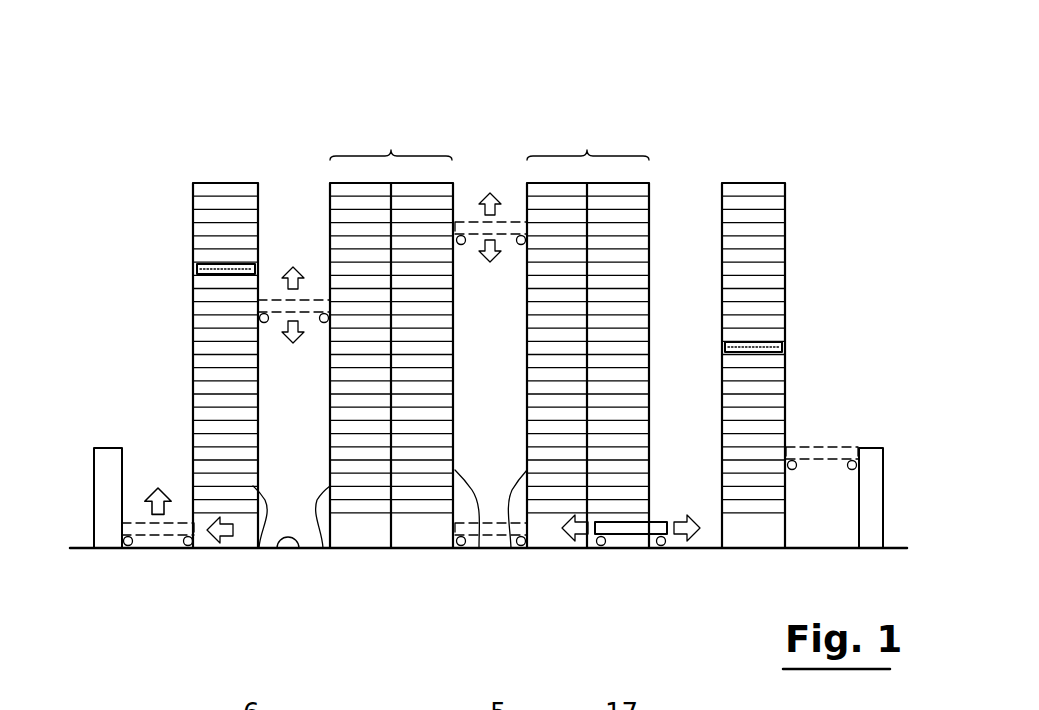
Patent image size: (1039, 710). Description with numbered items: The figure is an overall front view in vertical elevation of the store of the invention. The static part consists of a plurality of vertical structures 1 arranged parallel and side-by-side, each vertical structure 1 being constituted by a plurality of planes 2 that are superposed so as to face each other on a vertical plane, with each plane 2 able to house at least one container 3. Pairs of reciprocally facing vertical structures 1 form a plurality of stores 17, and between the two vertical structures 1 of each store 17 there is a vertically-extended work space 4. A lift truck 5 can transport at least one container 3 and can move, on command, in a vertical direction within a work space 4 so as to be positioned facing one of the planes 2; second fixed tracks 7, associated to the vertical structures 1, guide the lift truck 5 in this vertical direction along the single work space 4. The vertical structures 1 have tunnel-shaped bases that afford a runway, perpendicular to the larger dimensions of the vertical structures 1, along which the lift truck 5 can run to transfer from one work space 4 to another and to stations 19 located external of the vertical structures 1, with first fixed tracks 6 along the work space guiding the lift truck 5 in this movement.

The vertical structure 1 is at (160, 296).
The plane 2 is at (252, 257).
The container 3 is at (198, 266).
The work space 4 is at (306, 397).
The lift truck 5 is at (452, 493).
The first fixed track 6 is at (292, 549).
The second fixed track 7 is at (259, 548).
The store 17 is at (385, 127).
The station 19 is at (100, 412).